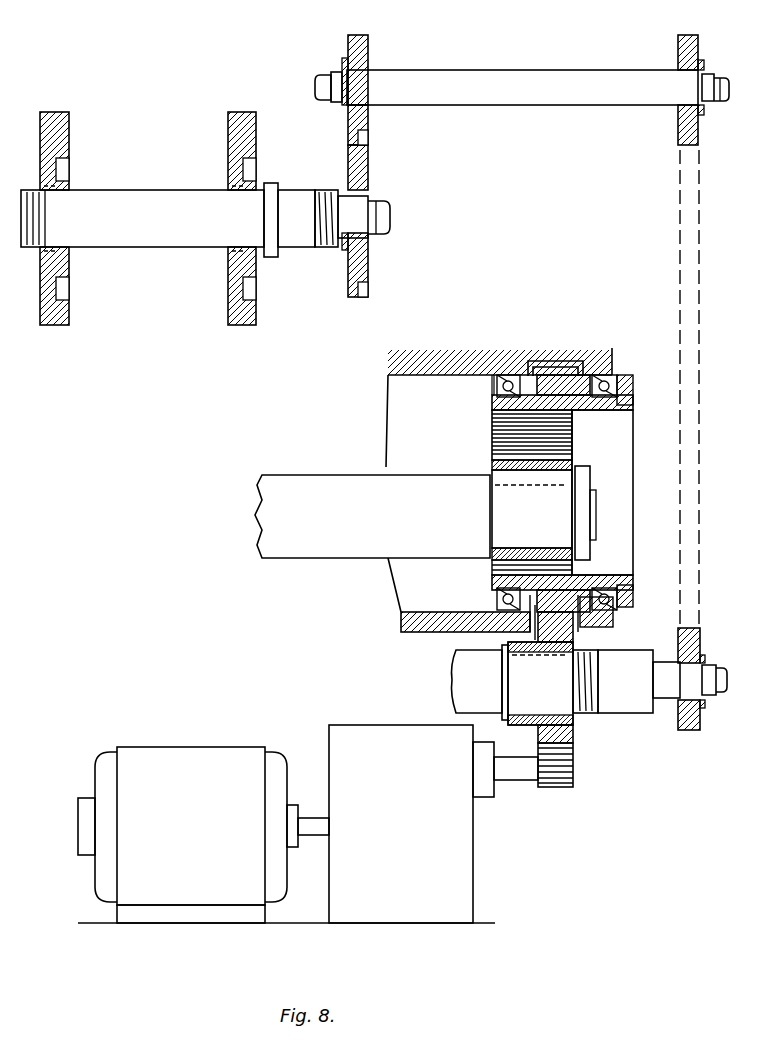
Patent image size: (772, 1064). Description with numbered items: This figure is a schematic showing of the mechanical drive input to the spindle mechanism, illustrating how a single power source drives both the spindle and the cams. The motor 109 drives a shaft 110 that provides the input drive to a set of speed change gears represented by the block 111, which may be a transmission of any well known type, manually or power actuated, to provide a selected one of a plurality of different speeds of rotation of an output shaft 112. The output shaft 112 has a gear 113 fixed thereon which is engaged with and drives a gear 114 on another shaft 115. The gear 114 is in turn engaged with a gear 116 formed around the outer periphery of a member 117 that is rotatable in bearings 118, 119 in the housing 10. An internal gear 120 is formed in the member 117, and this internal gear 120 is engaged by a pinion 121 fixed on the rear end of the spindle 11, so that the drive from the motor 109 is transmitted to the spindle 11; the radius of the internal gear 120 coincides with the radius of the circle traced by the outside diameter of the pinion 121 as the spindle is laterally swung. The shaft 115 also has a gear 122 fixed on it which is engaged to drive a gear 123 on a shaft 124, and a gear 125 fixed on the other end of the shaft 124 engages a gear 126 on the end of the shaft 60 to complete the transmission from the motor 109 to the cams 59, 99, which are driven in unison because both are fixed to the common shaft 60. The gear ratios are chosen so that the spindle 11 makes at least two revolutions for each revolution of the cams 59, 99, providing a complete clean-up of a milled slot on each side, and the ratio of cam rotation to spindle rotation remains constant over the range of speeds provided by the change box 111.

The housing 10 is at (405, 362).
The spindle 11 is at (345, 480).
The cam 59 is at (228, 113).
The shaft 60 is at (110, 190).
The cam 99 is at (70, 122).
The motor 109 is at (128, 746).
The shaft 110 is at (318, 815).
The speed change gears 111 is at (338, 724).
The output shaft 112 is at (515, 780).
The gear 113 is at (573, 785).
The gear 114 is at (574, 744).
The shaft 115 is at (455, 683).
The gear 116 is at (548, 364).
The member 117 is at (490, 406).
The bearing 118 is at (500, 374).
The bearing 119 is at (610, 384).
The internal gear 120 is at (490, 443).
The pinion 121 is at (572, 468).
The gear 122 is at (683, 730).
The gear 123 is at (680, 35).
The shaft 124 is at (497, 70).
The gear 125 is at (347, 48).
The gear 126 is at (368, 162).